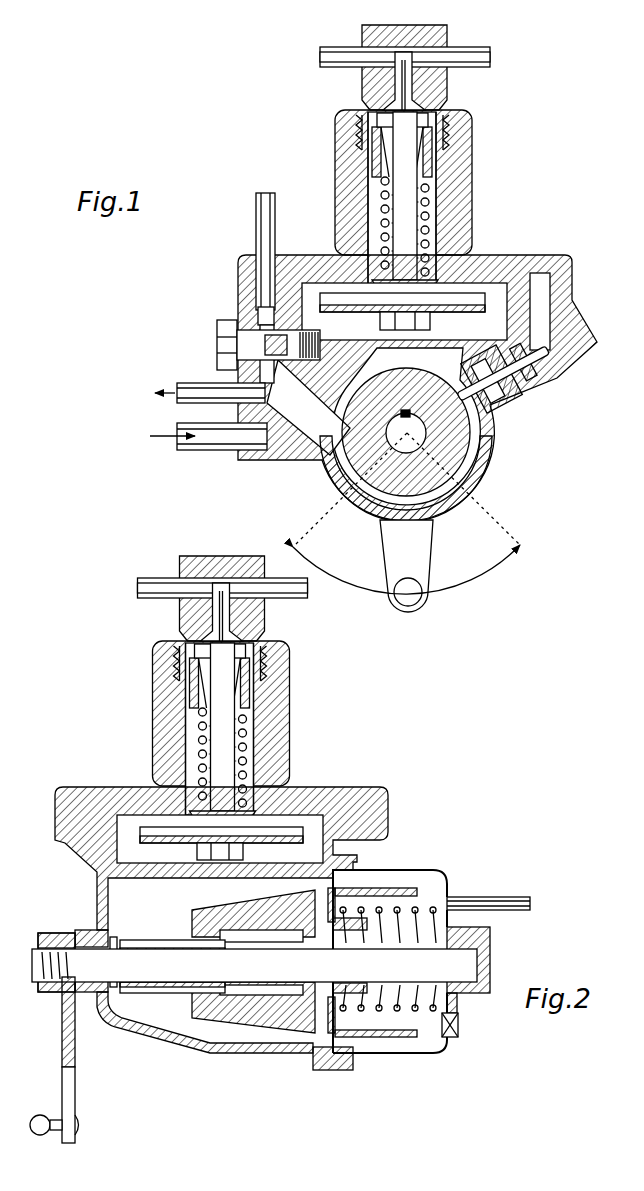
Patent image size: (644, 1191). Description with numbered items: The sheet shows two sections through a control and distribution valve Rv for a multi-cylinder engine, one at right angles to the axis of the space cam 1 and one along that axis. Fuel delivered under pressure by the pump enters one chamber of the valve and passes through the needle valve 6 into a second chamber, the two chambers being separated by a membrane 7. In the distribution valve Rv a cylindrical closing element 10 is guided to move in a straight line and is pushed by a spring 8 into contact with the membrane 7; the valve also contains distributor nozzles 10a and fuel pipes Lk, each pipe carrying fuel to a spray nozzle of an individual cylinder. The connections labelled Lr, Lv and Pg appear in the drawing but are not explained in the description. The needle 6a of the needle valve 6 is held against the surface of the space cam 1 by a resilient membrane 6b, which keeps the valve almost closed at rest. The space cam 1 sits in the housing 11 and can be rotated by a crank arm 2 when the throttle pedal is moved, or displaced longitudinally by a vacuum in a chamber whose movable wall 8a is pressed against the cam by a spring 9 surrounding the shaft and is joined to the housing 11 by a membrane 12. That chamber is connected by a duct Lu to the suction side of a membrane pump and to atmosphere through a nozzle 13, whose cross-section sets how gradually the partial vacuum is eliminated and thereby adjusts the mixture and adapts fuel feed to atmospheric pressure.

In FIG. 1, the space cam 1 is at (355, 445).
In FIG. 2, the space cam 1 is at (212, 1008).
In FIG. 1, the crank arm 2 is at (420, 556).
In FIG. 2, the crank arm 2 is at (72, 1098).
In FIG. 1, the needle valve 6 is at (528, 368).
In FIG. 1, the needle 6a is at (512, 385).
In FIG. 1, the resilient membrane 6b is at (500, 405).
In FIG. 1, the membrane 7 is at (485, 298).
In FIG. 2, the membrane 7 is at (290, 830).
In FIG. 1, the spring 8 is at (434, 249).
In FIG. 2, the spring 8 is at (345, 889).
In FIG. 2, the movable wall 8a is at (341, 892).
In FIG. 2, the spring 9 is at (403, 1012).
In FIG. 1, the cylindrical closing element 10 is at (412, 215).
In FIG. 2, the cylindrical closing element 10 is at (254, 733).
In FIG. 1, the distributor nozzles 10a is at (393, 110).
In FIG. 2, the distributor nozzles 10a is at (220, 632).
In FIG. 1, the housing 11 is at (480, 470).
In FIG. 2, the housing 11 is at (266, 1049).
In FIG. 2, the membrane 12 is at (377, 1038).
In FIG. 2, the nozzle 13 is at (460, 1036).
In FIG. 1, the fuel pipes Lk is at (320, 58).
In FIG. 2, the fuel pipes Lk is at (226, 588).
In FIG. 1, the return line Lr is at (200, 390).
In FIG. 1, the supply line Lv is at (226, 440).
In FIG. 2, the duct Lu is at (528, 897).
In FIG. 1, the pressure gauge connection Pg is at (262, 210).
In FIG. 1, the control and distribution valve Rv is at (476, 136).
In FIG. 2, the control and distribution valve Rv is at (251, 728).